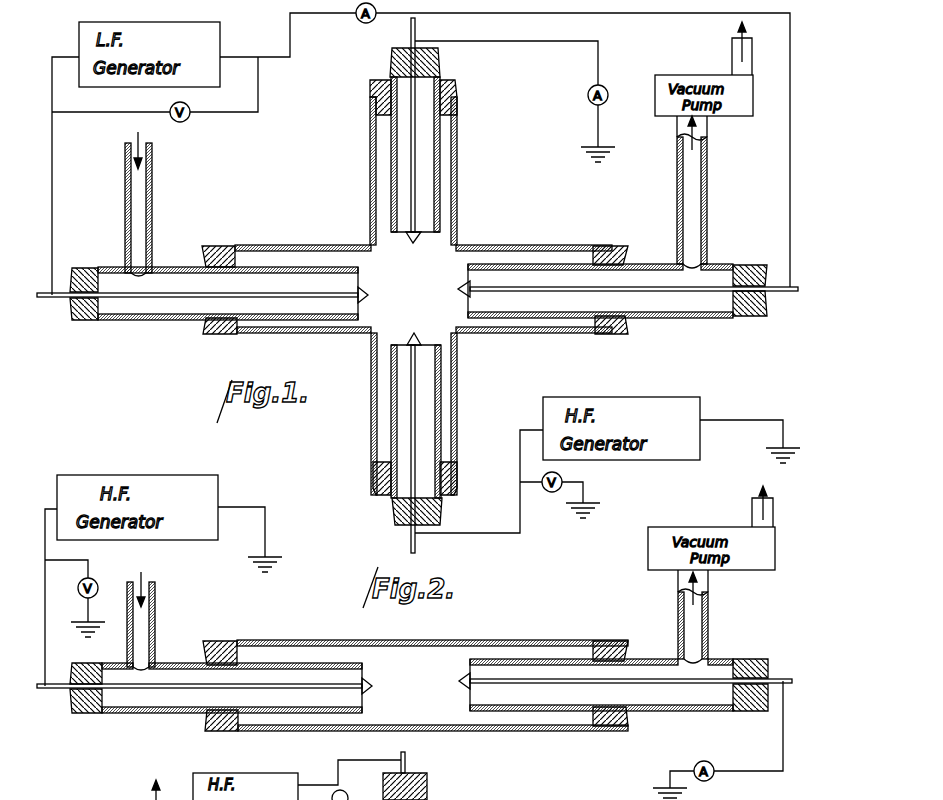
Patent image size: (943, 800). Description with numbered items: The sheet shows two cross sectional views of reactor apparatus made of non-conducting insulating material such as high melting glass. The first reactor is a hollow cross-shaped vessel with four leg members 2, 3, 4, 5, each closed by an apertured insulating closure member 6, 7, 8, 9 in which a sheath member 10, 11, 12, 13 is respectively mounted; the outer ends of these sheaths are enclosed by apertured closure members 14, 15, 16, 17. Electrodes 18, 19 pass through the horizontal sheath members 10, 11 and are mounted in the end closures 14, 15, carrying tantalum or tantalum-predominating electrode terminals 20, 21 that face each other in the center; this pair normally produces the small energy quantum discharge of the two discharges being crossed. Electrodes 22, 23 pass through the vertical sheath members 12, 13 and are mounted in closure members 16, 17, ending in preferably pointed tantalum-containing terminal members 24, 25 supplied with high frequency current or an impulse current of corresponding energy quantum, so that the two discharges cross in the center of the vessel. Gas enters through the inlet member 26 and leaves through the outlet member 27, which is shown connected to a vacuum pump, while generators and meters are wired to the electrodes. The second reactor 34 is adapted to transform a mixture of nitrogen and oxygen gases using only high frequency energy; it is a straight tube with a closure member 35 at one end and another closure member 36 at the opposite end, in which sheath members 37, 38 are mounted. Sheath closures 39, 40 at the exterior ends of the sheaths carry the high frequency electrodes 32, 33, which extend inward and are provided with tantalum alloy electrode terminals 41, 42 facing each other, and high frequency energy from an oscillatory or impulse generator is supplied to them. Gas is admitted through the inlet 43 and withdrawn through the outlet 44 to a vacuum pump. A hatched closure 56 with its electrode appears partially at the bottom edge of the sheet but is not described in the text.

In FIG. 1, the leg member 2 is at (310, 250).
In FIG. 1, the leg member 3 is at (513, 248).
In FIG. 1, the leg member 4 is at (372, 165).
In FIG. 1, the leg member 5 is at (458, 386).
In FIG. 1, the apertured insulating closure member 6 is at (215, 334).
In FIG. 1, the apertured insulating closure member 7 is at (622, 334).
In FIG. 1, the apertured insulating closure member 8 is at (456, 90).
In FIG. 1, the apertured insulating closure member 9 is at (456, 486).
In FIG. 1, the sheath member 10 is at (258, 265).
In FIG. 1, the sheath member 11 is at (556, 262).
In FIG. 1, the sheath member 12 is at (440, 140).
In FIG. 1, the sheath member 13 is at (393, 398).
In FIG. 1, the apertured closure member 14 is at (70, 310).
In FIG. 1, the apertured closure member 15 is at (758, 265).
In FIG. 1, the apertured closure member 16 is at (432, 50).
In FIG. 1, the apertured closure member 17 is at (392, 523).
In FIG. 1, the electrode 18 is at (167, 297).
In FIG. 1, the electrode 19 is at (640, 287).
In FIG. 1, the electrode terminal 20 is at (368, 289).
In FIG. 1, the electrode terminal 21 is at (456, 288).
In FIG. 1, the electrode 22 is at (418, 188).
In FIG. 1, the electrode 23 is at (418, 441).
In FIG. 1, the terminal member 24 is at (405, 240).
In FIG. 1, the terminal member 25 is at (408, 333).
In FIG. 1, the inlet member 26 is at (152, 195).
In FIG. 1, the outlet member 27 is at (680, 173).
In FIG. 2, the high frequency electrode 32 is at (281, 684).
In FIG. 2, the high frequency electrode 33 is at (519, 683).
In FIG. 2, the reactor 34 is at (430, 637).
In FIG. 2, the closure member 35 is at (205, 718).
In FIG. 2, the closure member 36 is at (620, 722).
In FIG. 2, the sheath member 37 is at (275, 706).
In FIG. 2, the sheath member 38 is at (548, 708).
In FIG. 2, the sheath closure 39 is at (70, 709).
In FIG. 2, the sheath closure 40 is at (752, 708).
In FIG. 2, the electrode terminal 41 is at (371, 684).
In FIG. 2, the electrode terminal 42 is at (459, 689).
In FIG. 2, the inlet 43 is at (155, 609).
In FIG. 2, the outlet 44 is at (706, 605).
In FIG. 2, the sealing plug 56 is at (427, 781).